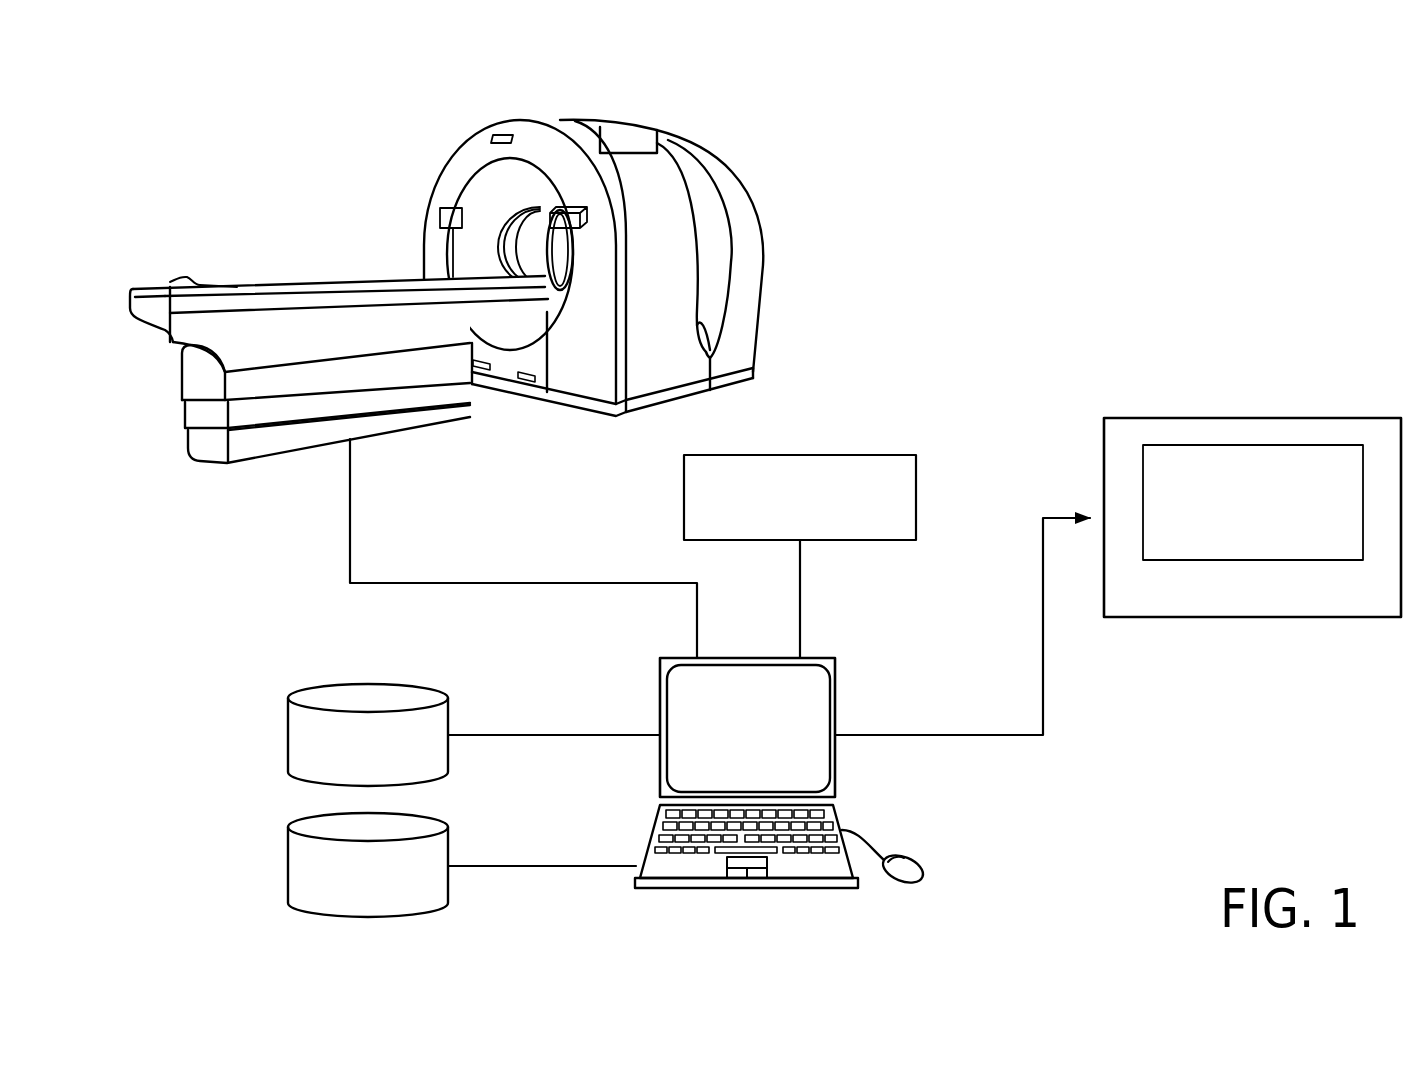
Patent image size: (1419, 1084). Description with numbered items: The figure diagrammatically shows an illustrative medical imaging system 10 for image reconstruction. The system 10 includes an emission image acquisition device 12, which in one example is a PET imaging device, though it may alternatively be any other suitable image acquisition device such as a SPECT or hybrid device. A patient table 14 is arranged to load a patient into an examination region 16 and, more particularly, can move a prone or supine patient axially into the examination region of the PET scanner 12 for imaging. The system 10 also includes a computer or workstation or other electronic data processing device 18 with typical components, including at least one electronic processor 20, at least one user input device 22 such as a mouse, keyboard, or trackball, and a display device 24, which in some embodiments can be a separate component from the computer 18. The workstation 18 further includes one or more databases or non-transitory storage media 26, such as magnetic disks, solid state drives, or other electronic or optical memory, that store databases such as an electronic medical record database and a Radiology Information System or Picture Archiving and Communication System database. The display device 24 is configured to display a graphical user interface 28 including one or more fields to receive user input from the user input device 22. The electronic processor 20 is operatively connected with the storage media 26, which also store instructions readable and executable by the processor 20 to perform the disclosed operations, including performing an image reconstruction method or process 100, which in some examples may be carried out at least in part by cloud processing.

The medical imaging system 10 is at (168, 184).
The emission image acquisition device 12 is at (568, 242).
The patient table 14 is at (318, 280).
The examination region 16 is at (546, 255).
The electronic data processing device 18 is at (643, 666).
The electronic processor 20 is at (658, 776).
The user input device 22 is at (924, 876).
The display device 24 is at (734, 744).
The databases or non-transitory storage media 26 is at (265, 675).
The graphical user interface 28 is at (1239, 509).
The image reconstruction method or process 100 is at (892, 449).